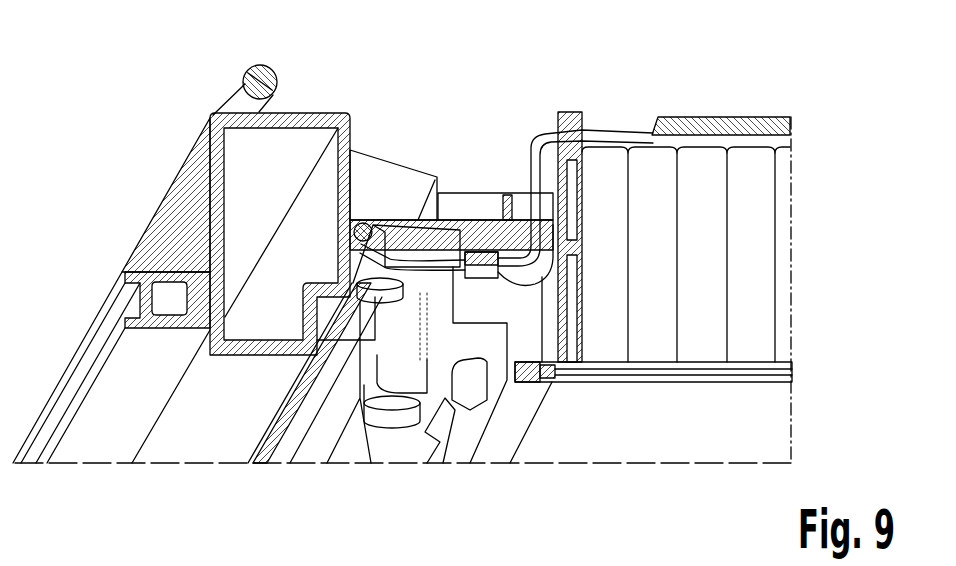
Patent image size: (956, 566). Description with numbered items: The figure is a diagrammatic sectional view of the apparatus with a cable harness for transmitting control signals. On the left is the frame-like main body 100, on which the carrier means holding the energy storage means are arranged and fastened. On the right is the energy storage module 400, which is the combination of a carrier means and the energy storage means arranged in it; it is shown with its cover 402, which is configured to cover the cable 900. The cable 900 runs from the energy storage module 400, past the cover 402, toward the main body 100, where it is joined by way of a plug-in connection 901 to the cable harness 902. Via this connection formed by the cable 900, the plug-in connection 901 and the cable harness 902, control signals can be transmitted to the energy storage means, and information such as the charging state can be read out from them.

The main body 100 is at (165, 225).
The energy storage module 400 is at (802, 328).
The cover 402 is at (730, 100).
The cable 900 is at (612, 117).
The plug-in connection 901 is at (487, 248).
The cable harness 902 is at (377, 220).